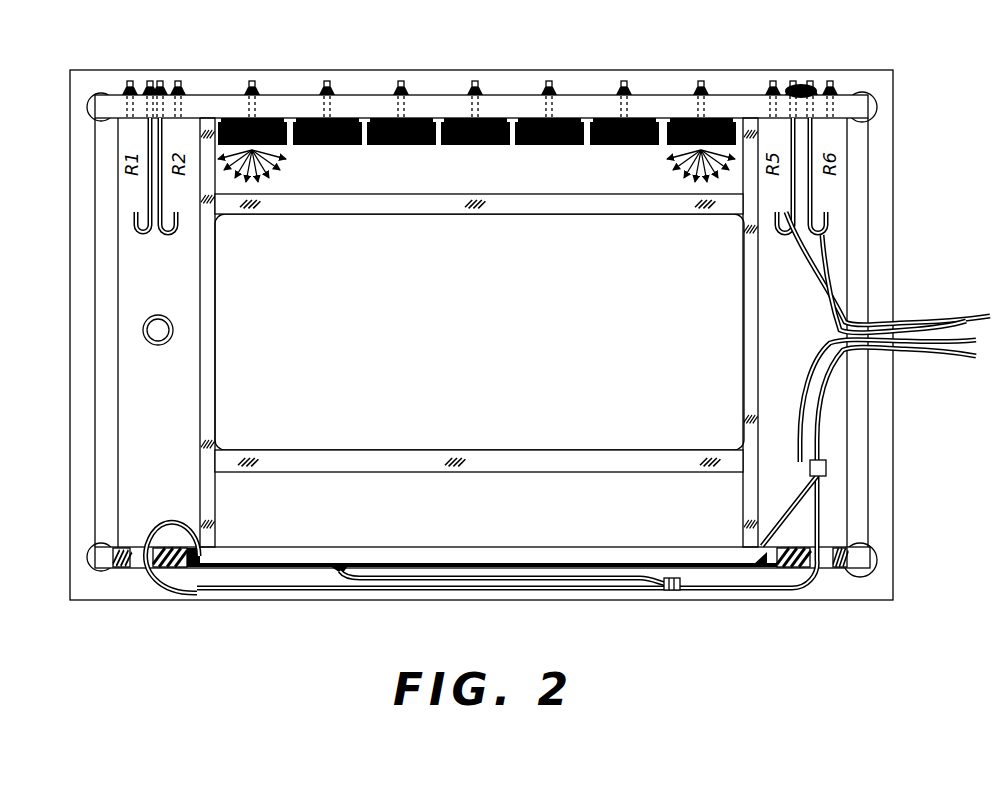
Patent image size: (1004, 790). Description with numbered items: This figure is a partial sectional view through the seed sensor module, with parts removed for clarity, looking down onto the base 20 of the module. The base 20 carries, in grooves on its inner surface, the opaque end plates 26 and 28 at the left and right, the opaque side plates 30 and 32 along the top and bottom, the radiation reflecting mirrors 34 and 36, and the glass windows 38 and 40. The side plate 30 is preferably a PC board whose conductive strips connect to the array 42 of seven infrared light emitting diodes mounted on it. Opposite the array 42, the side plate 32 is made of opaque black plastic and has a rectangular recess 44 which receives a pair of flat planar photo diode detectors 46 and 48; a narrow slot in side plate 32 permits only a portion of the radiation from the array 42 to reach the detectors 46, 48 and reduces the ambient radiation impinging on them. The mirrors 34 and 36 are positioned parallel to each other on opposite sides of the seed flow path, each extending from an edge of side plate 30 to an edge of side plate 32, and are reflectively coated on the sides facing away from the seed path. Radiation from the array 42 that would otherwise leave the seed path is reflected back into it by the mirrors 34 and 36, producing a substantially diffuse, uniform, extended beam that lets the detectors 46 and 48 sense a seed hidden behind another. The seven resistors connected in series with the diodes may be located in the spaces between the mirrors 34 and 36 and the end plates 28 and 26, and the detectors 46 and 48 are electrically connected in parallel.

The base 20 is at (750, 72).
The opaque end plate 26 is at (112, 387).
The opaque end plate 28 is at (862, 447).
The side plate 30 is at (218, 95).
The side plate 32 is at (178, 520).
The mirror 34 is at (760, 344).
The mirror 36 is at (205, 273).
The glass window 38 is at (390, 197).
The glass window 40 is at (372, 478).
The array of radiation generators 42 is at (505, 112).
The rectangular recess 44 is at (238, 562).
The detector 46 is at (386, 562).
The detector 48 is at (528, 562).